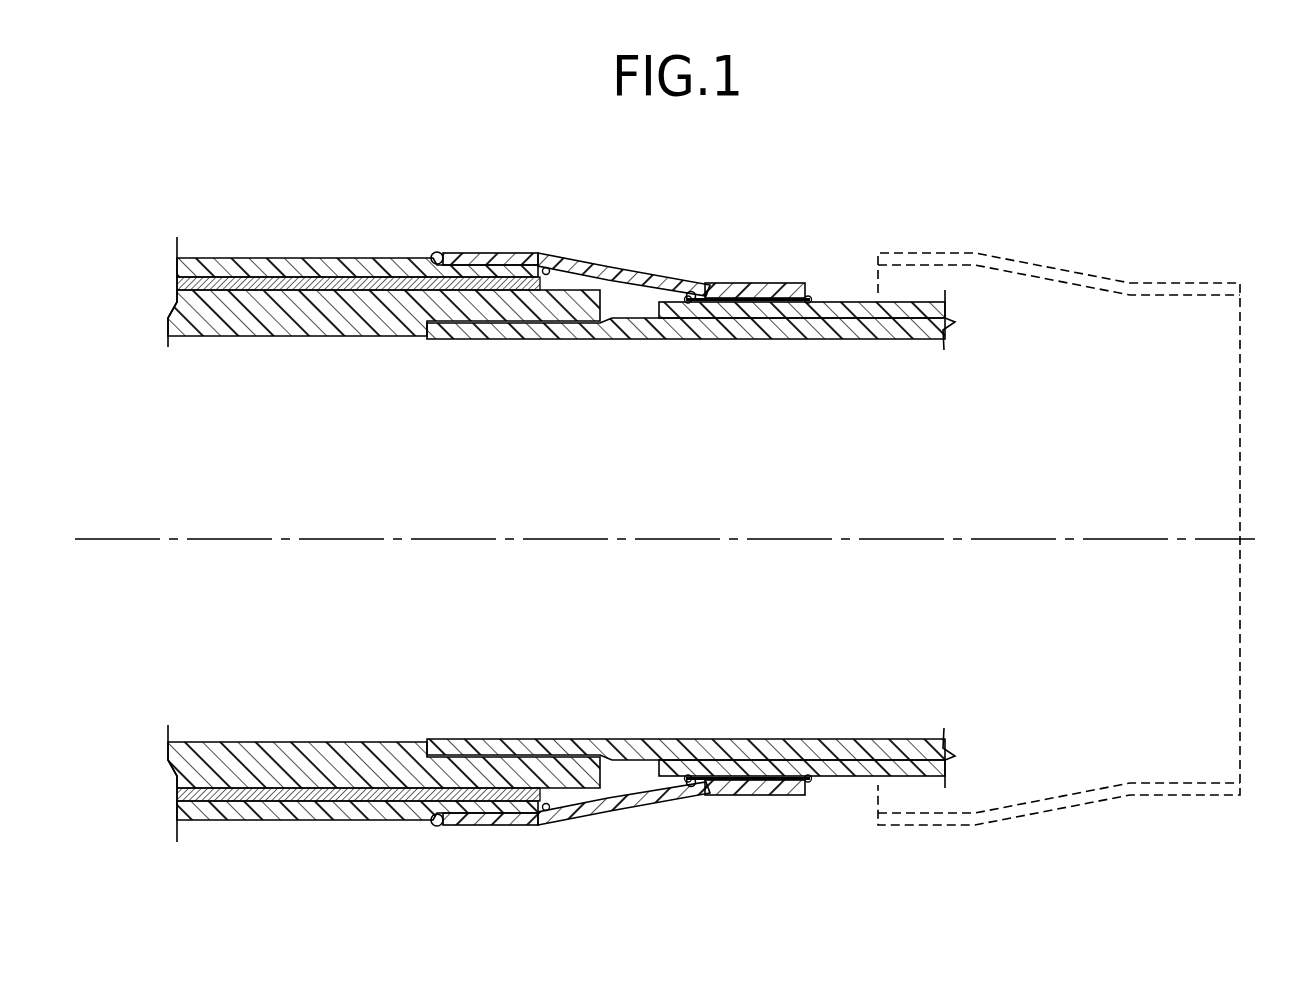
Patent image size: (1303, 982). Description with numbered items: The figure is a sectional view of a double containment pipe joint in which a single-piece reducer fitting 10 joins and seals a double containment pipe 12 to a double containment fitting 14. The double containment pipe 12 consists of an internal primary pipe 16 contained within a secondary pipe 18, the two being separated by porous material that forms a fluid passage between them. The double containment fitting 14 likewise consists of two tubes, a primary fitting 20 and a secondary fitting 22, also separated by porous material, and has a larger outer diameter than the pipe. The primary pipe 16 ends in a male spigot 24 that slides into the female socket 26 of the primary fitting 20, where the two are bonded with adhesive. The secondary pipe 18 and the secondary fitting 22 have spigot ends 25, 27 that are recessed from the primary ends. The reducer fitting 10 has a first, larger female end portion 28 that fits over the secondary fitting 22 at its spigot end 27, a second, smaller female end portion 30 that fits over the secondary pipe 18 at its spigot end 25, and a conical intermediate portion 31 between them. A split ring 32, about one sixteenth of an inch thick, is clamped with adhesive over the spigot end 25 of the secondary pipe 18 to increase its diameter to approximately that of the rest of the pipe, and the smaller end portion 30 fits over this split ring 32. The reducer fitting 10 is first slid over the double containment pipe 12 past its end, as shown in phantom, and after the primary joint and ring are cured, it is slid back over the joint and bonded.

The reducer fitting 10 is at (640, 252).
The double containment pipe 12 is at (841, 272).
The double containment fitting 14 is at (322, 205).
The primary pipe 16 is at (876, 740).
The secondary pipe 18 is at (867, 778).
The primary fitting 20 is at (355, 742).
The secondary fitting 22 is at (272, 815).
The spigot 24 is at (560, 322).
The spigot end 25 is at (718, 290).
The socket 26 is at (462, 328).
The spigot end 27 is at (518, 265).
The first female end portion 28 is at (497, 822).
The second female end portion 30 is at (770, 796).
The conical intermediate portion 31 is at (633, 808).
The split ring 32 is at (768, 301).